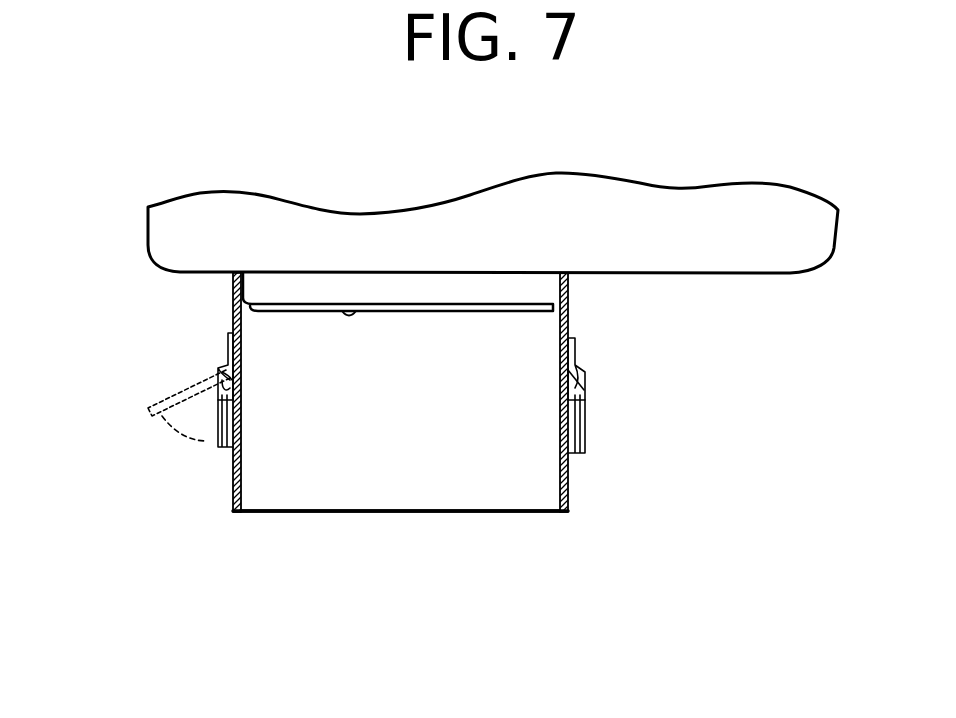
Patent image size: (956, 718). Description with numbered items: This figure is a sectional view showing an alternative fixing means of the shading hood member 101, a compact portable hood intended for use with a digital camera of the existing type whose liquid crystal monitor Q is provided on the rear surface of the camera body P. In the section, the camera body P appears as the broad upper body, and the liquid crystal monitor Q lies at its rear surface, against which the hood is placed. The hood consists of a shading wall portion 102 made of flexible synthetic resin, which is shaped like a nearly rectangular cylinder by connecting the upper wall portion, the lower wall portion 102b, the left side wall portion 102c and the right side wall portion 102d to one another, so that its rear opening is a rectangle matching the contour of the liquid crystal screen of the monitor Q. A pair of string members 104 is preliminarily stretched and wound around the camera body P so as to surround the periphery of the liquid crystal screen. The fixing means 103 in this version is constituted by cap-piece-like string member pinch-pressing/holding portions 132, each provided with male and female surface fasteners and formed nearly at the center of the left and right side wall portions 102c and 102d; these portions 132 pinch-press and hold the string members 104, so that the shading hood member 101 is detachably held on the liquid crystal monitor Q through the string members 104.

The shading hood member 101 is at (411, 548).
The shading wall portion 102 is at (322, 513).
The lower wall portion 102b is at (455, 465).
The left side wall portion 102c is at (230, 473).
The right side wall portion 102d is at (570, 482).
The fixing means 103 is at (184, 381).
The string member 104 is at (222, 368).
The string member pinch-pressing/holding portion 132 is at (207, 438).
The camera body P is at (708, 202).
The liquid crystal monitor Q is at (360, 303).